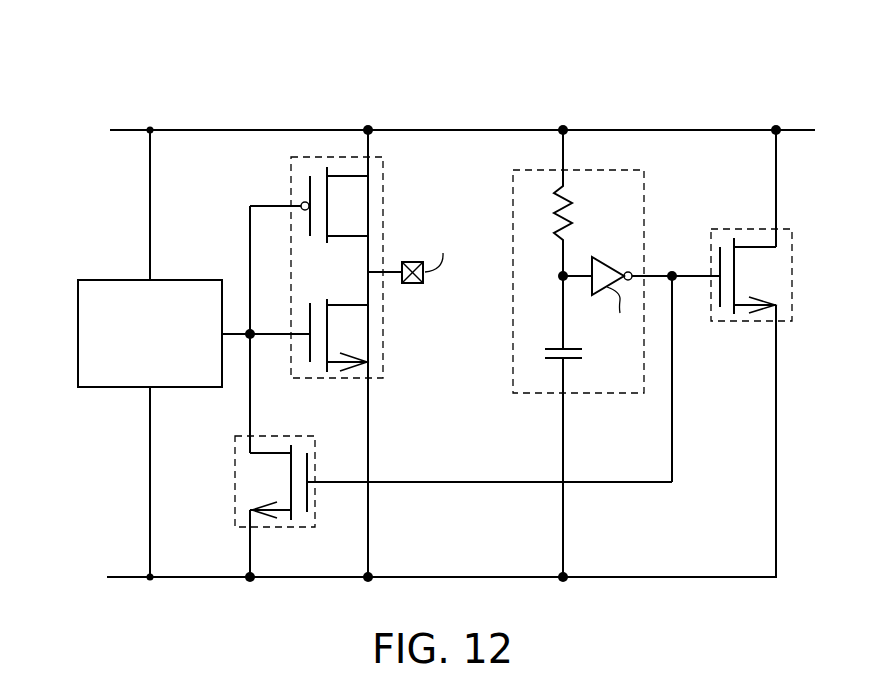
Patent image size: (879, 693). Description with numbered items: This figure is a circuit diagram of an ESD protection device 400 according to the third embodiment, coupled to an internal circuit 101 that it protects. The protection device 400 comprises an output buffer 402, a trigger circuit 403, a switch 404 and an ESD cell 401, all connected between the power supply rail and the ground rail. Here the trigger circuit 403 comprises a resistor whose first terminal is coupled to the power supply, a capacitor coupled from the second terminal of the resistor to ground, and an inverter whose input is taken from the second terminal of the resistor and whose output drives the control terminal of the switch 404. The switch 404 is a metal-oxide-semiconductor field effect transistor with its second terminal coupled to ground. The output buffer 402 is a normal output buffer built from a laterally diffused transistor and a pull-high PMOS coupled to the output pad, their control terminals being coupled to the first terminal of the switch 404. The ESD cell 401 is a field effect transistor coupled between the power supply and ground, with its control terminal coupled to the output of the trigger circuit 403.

The ESD protection device 400 is at (180, 101).
The internal circuit 101 is at (78, 297).
The ESD cell 401 is at (747, 322).
The output buffer 402 is at (382, 340).
The trigger circuit 403 is at (513, 353).
The switch 404 is at (235, 490).